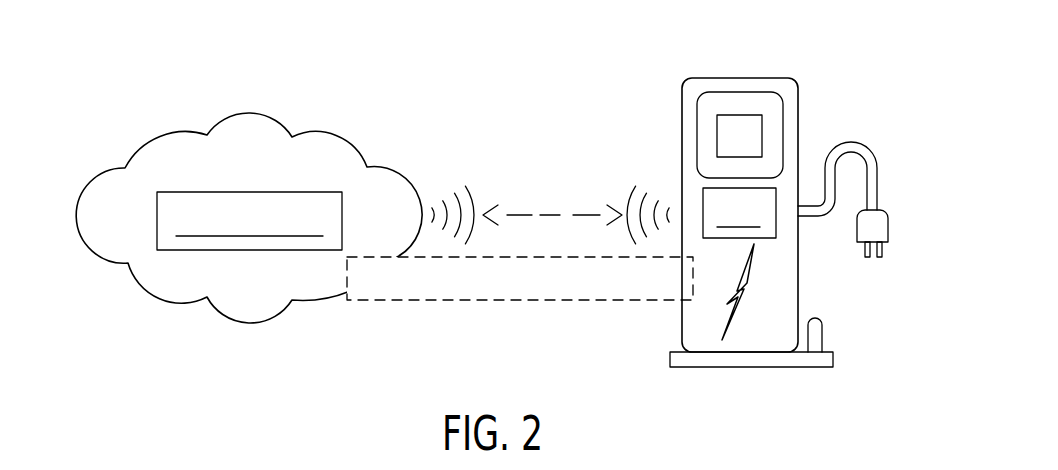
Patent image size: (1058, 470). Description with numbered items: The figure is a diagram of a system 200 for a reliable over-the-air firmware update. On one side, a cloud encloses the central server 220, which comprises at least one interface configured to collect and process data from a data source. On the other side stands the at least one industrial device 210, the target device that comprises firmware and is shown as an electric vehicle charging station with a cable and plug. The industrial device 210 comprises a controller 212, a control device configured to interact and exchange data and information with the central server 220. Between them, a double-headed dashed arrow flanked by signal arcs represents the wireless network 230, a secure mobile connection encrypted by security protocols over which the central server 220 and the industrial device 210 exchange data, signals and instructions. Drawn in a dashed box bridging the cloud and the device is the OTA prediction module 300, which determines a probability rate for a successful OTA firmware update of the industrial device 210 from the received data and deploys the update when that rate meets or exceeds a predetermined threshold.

The system 200 is at (352, 60).
The industrial device 210 is at (779, 197).
The controller 212 is at (739, 213).
The central server 220 is at (273, 192).
The wireless network 230 is at (549, 210).
The OTA prediction module 300 is at (530, 301).